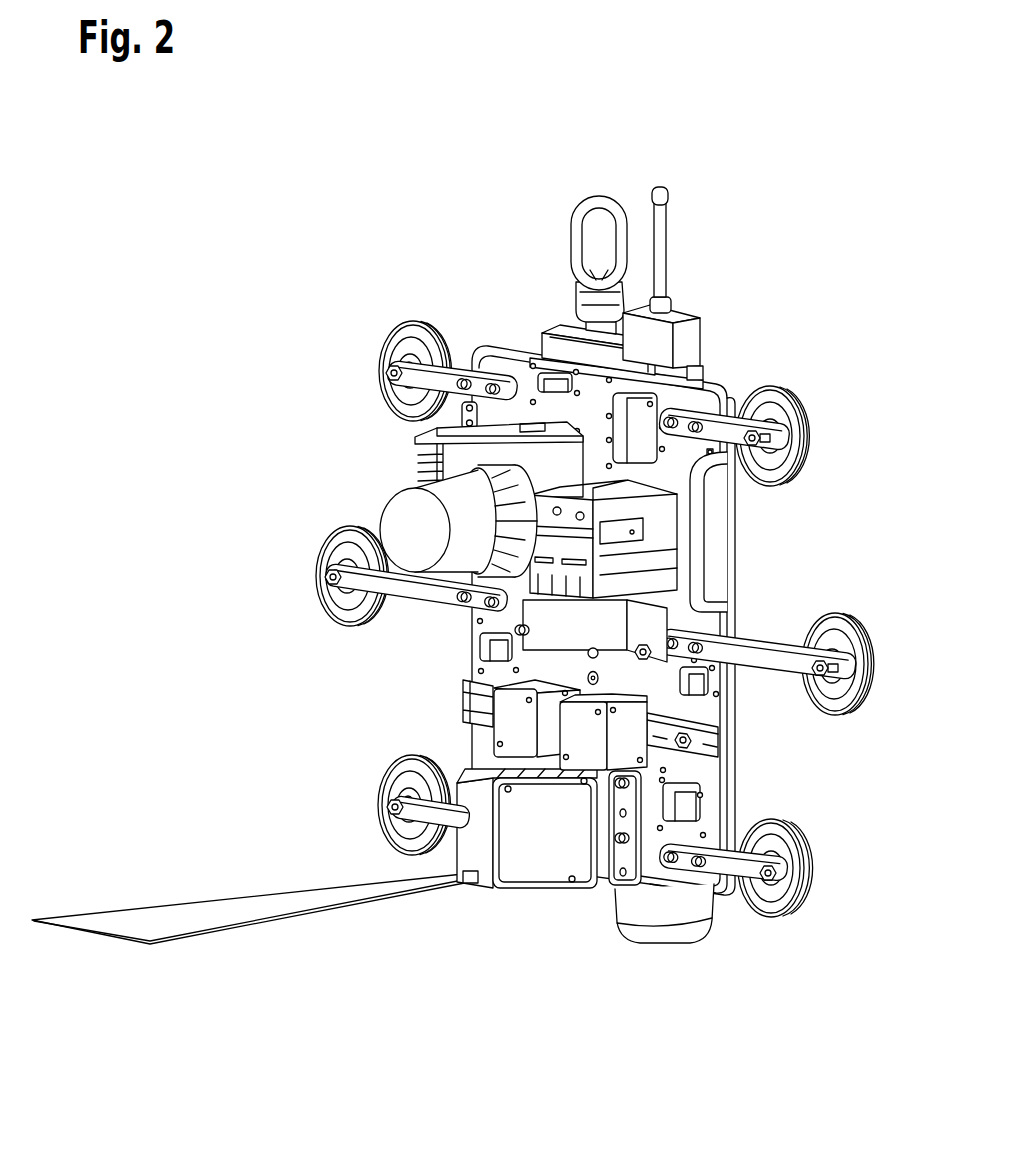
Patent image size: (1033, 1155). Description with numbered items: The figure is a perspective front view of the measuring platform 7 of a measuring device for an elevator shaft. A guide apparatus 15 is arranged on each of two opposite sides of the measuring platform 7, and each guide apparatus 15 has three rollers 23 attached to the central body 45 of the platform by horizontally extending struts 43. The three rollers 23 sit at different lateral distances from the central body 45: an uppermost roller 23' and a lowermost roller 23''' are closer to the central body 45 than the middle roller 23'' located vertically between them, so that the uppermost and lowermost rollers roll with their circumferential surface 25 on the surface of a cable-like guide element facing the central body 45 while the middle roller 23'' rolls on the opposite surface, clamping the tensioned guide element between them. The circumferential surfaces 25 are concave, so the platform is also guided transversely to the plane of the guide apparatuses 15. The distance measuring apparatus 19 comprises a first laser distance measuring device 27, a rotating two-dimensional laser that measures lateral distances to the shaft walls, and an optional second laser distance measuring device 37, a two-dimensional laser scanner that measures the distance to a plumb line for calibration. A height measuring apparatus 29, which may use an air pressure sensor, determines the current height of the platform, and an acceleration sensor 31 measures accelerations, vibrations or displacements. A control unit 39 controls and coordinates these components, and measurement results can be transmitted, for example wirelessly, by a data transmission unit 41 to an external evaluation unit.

The measuring platform 7 is at (289, 234).
The guide apparatus 15 is at (358, 394).
The distance measuring apparatus 19 is at (610, 1034).
The rollers 23 is at (378, 541).
The uppermost roller 23' is at (812, 407).
The middle roller 23'' is at (875, 627).
The lowermost roller 23''' is at (833, 866).
The circumferential surface 25 is at (793, 904).
The first laser distance measuring device 27 is at (652, 955).
The height measuring apparatus 29 is at (515, 711).
The acceleration sensor 31 is at (636, 744).
The second laser distance measuring device 37 is at (533, 899).
The control unit 39 is at (660, 534).
The data transmission unit 41 is at (700, 336).
The struts 43 is at (732, 426).
The central body 45 is at (712, 614).